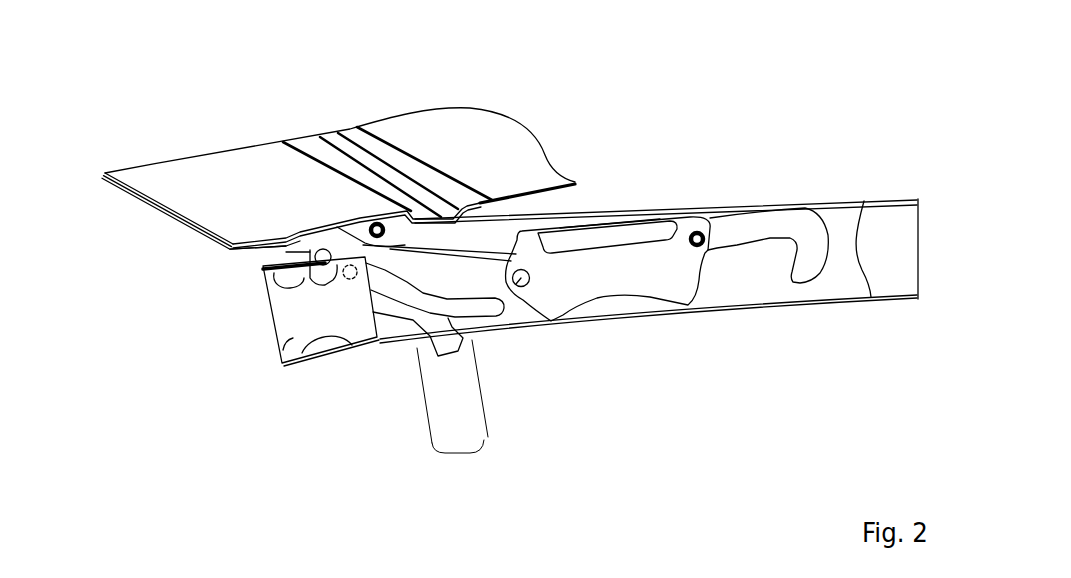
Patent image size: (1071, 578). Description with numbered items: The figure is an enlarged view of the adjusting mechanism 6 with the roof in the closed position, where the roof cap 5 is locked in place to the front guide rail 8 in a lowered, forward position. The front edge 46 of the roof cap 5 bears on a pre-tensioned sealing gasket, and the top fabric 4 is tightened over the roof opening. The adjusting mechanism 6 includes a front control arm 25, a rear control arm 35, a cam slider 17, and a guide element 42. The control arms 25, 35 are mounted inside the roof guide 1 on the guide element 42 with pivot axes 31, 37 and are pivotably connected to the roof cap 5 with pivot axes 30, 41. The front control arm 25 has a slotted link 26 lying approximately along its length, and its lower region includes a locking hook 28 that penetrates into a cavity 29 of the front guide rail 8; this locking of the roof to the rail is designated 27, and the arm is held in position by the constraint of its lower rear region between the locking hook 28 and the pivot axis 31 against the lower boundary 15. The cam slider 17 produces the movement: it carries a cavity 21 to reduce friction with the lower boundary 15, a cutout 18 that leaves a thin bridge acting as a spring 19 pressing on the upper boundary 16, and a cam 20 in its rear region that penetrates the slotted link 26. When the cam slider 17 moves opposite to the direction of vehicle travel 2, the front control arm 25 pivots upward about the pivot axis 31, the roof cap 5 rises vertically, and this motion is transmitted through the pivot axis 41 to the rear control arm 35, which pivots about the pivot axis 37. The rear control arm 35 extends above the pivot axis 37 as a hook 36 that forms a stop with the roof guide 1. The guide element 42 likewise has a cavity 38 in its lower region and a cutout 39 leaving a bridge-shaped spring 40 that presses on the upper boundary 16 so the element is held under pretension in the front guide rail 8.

The roof guide 1 is at (856, 146).
The direction of vehicle travel 2 is at (778, 530).
The top fabric 4 is at (484, 166).
The roof cap 5 is at (240, 201).
The adjusting mechanism 6 is at (600, 414).
The front guide rail 8 is at (892, 256).
The lower boundary 15 is at (795, 303).
The upper boundary 16 is at (762, 200).
The cam slider 17 is at (265, 338).
The cutout 18 is at (275, 280).
The spring 19 is at (293, 262).
The cam 20 is at (355, 280).
The cavity 21 is at (330, 340).
The front control arm 25 is at (518, 326).
The slotted link 26 is at (408, 292).
The locking 27 is at (486, 353).
The locking hook 28 is at (447, 357).
The cavity 29 is at (459, 454).
The pivot axis 30 is at (318, 249).
The pivot axis 31 is at (511, 271).
The rear control arm 35 is at (533, 208).
The hook 36 is at (813, 260).
The pivot axis 37 is at (697, 231).
The cavity 38 is at (617, 298).
The cutout 39 is at (643, 238).
The spring 40 is at (612, 220).
The pivot axis 41 is at (377, 220).
The guide element 42 is at (698, 312).
The front edge 46 is at (203, 230).